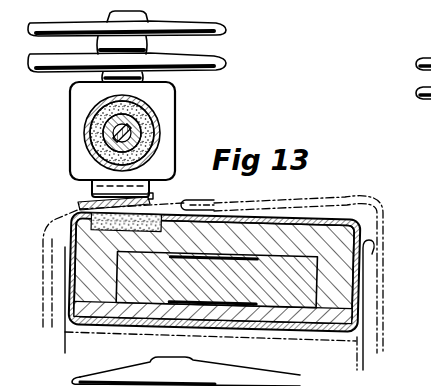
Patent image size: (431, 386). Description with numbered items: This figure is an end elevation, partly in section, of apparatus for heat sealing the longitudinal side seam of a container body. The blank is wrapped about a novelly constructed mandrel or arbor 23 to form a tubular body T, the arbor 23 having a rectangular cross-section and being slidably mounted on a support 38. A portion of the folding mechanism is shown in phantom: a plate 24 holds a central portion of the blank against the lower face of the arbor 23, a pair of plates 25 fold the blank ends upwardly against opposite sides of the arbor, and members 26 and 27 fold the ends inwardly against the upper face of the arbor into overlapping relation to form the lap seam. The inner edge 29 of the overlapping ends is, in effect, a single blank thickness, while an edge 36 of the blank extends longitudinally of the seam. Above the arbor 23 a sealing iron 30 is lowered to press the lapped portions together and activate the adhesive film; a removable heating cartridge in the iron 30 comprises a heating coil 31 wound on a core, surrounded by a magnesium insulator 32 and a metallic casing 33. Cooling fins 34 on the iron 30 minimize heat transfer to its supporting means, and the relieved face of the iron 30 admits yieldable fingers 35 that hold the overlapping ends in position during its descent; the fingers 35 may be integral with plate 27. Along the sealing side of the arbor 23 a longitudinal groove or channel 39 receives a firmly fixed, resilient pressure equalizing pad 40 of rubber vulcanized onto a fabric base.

The mandrel or arbor 23 is at (344, 283).
The plate 24 is at (308, 338).
The plates 25 is at (63, 337).
The member 26 is at (343, 198).
The member 27 is at (53, 230).
The inner edge 29 is at (81, 208).
The sealing iron 30 is at (174, 97).
The heating coil 31 is at (105, 139).
The magnesium insulator 32 is at (100, 118).
The metallic casing 33 is at (97, 104).
The cooling fins 34 is at (226, 31).
The yieldable fingers 35 is at (158, 197).
The edge 36 is at (157, 199).
The support 38 is at (157, 290).
The groove or channel 39 is at (100, 228).
The pressure equalizing pad 40 is at (78, 210).
The tubular body T is at (360, 333).